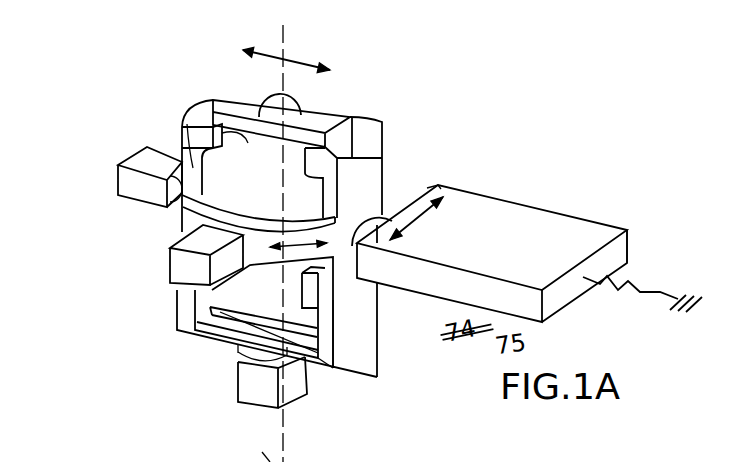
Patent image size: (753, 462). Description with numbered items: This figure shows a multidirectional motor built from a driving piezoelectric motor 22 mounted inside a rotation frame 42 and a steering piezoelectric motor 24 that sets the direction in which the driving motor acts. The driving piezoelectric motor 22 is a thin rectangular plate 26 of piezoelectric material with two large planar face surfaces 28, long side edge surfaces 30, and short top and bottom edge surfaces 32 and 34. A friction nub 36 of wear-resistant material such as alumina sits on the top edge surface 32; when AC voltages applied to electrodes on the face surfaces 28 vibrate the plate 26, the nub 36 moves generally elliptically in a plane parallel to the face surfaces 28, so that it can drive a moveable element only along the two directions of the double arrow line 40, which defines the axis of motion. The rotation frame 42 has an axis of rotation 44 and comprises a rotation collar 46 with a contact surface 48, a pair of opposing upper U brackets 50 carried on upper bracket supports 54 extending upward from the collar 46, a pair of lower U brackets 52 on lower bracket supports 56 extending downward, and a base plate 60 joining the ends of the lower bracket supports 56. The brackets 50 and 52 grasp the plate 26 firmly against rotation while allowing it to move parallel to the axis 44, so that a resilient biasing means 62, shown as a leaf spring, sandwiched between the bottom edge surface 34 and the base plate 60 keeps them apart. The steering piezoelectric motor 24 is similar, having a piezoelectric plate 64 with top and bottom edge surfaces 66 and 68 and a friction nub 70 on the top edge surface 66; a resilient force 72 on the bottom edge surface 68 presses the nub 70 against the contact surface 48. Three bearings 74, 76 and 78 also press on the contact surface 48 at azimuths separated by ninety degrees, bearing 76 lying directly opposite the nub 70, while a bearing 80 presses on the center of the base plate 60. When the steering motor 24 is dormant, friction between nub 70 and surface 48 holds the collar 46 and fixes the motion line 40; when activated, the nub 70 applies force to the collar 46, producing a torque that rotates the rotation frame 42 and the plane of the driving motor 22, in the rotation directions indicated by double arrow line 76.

The driving piezoelectric motor 22 is at (415, 66).
The steering piezoelectric motor 24 is at (542, 177).
The piezoelectric plate 26 is at (232, 181).
The face surfaces 28 is at (256, 92).
The long side edge surfaces 30 is at (385, 115).
The top edge surface 32 is at (323, 108).
The bottom edge surface 34 is at (350, 325).
The friction nub 36 is at (296, 98).
The double arrow line (motion line) 40 is at (276, 50).
The rotation frame 42 is at (390, 355).
The axis of rotation 44 is at (285, 27).
The rotation collar 46 is at (198, 335).
The contact surface 48 is at (233, 335).
The upper U brackets 50 is at (190, 117).
The lower U brackets 52 is at (350, 302).
The upper bracket support 54 is at (190, 165).
The lower bracket support 56 is at (182, 298).
The base plate 60 is at (232, 347).
The resilient biasing means 62 is at (318, 372).
The piezoelectric plate 64 is at (559, 223).
The top edge surface 66 is at (440, 186).
The bottom edge surface 68 is at (620, 250).
The friction nub 70 is at (427, 187).
The resilient force 72 is at (632, 280).
The bearing 74 is at (178, 262).
The bearing 76 is at (125, 183).
The bearing 78 is at (363, 146).
The bearing 80 is at (262, 388).